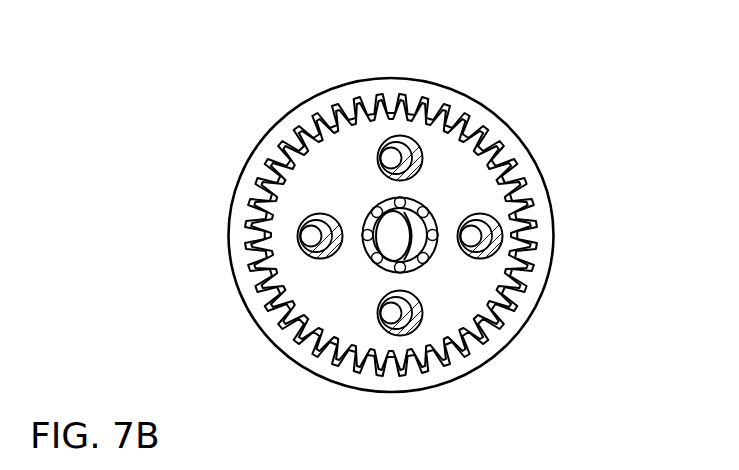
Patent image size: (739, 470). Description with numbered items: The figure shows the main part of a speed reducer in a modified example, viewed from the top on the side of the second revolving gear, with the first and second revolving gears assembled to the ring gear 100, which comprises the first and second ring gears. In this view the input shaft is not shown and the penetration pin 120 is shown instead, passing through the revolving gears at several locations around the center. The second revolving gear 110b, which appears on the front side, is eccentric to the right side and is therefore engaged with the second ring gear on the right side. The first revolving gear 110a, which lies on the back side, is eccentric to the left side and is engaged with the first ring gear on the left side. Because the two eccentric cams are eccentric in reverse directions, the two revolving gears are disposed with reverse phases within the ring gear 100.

The ring gear 100 is at (297, 112).
The first revolving gear 110a is at (590, 311).
The second revolving gear 110b is at (456, 157).
The penetration pin 120 is at (387, 138).